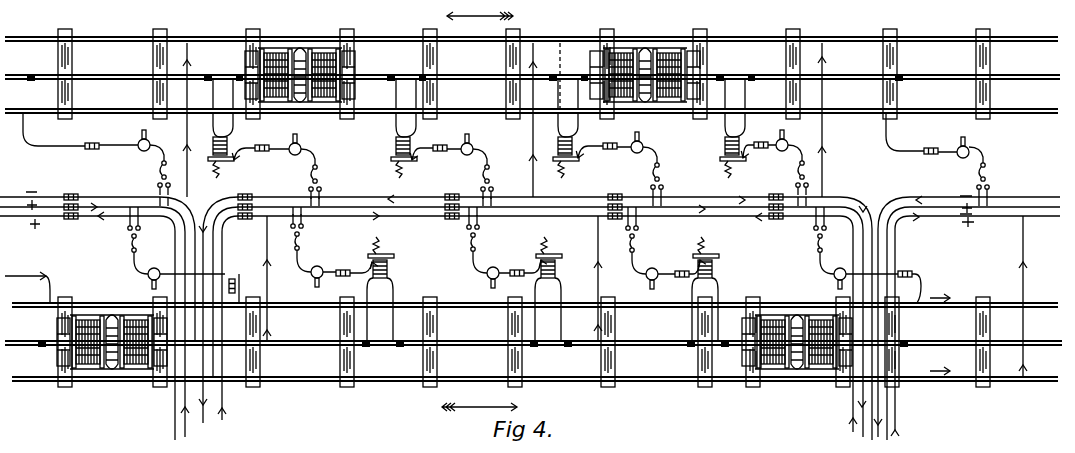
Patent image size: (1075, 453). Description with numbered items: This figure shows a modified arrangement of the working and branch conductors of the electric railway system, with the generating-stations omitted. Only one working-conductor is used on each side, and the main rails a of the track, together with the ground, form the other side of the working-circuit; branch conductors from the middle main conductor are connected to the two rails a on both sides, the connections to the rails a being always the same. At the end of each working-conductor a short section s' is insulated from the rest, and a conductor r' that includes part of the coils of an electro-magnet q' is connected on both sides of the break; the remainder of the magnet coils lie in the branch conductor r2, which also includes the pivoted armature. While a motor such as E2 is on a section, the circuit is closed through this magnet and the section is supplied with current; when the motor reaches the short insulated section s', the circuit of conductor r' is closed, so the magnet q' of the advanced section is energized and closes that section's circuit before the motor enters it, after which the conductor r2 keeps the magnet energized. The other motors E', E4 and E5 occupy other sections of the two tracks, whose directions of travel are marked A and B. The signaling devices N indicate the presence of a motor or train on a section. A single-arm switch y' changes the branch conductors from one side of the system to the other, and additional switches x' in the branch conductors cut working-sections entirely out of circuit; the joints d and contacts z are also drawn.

The rails a is at (538, 200).
The insulating rail joints d is at (471, 200).
The short insulated section s' is at (487, 206).
The transformer E' is at (300, 56).
The motor E2 is at (645, 58).
The transformer E4 is at (112, 326).
The transformer E5 is at (797, 326).
The electrically-controlled signaling devices N is at (545, 208).
The electro-magnet q' is at (492, 210).
The conductor r' is at (485, 205).
The branch conductor r2 is at (490, 208).
The additional switches x' is at (511, 217).
The contact points z is at (562, 209).
The single-arm switch y' is at (571, 201).
The direction of travel on track A is at (501, 406).
The direction of travel on track B is at (503, 15).